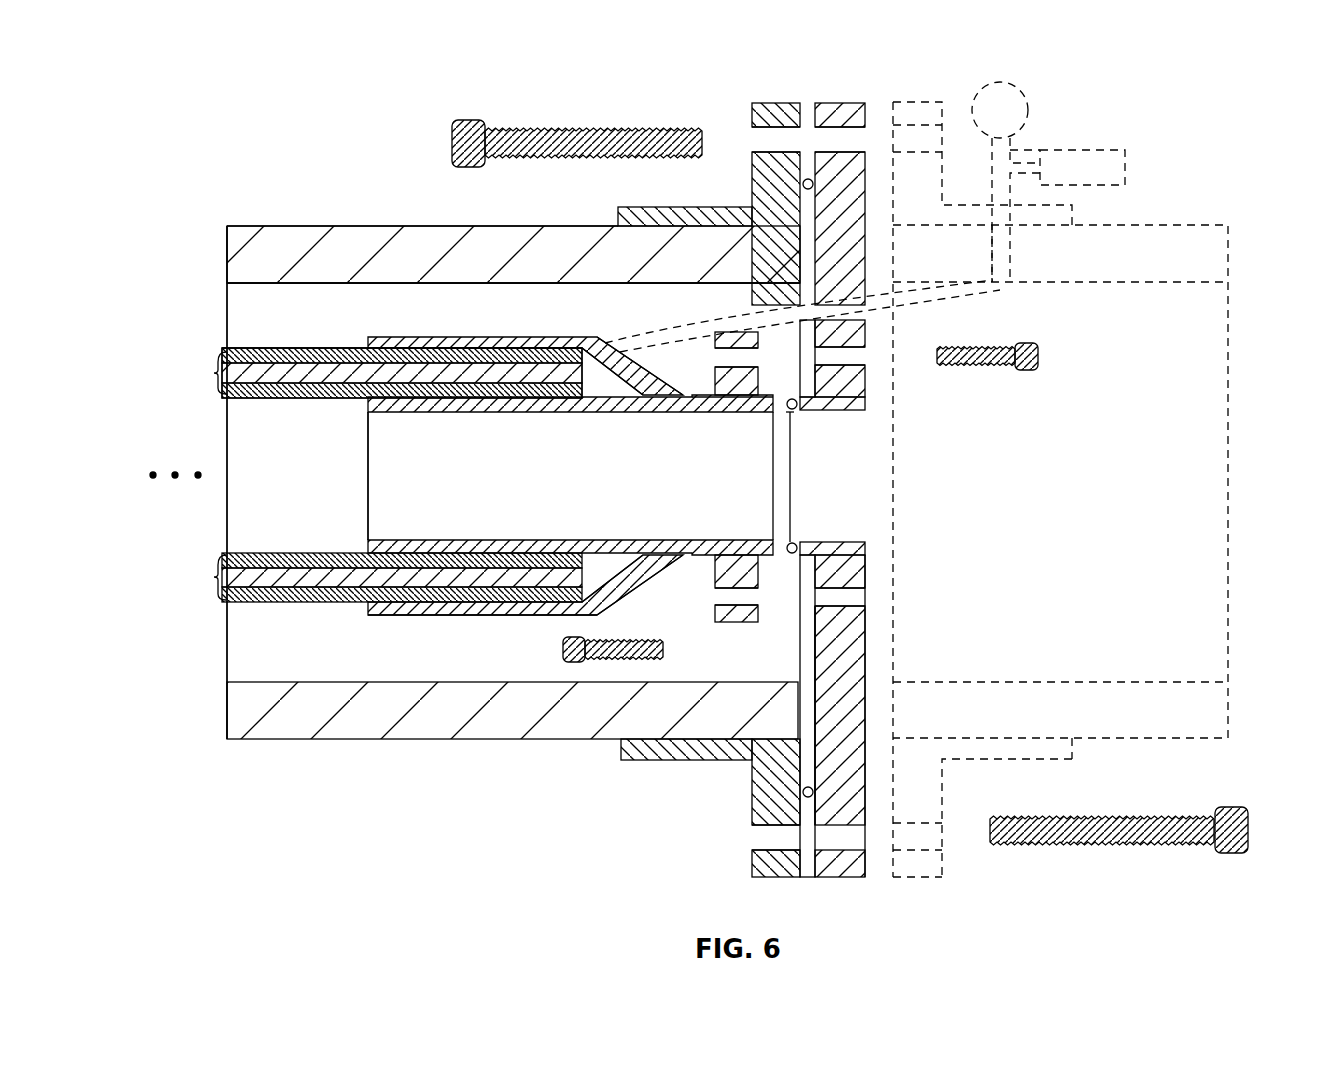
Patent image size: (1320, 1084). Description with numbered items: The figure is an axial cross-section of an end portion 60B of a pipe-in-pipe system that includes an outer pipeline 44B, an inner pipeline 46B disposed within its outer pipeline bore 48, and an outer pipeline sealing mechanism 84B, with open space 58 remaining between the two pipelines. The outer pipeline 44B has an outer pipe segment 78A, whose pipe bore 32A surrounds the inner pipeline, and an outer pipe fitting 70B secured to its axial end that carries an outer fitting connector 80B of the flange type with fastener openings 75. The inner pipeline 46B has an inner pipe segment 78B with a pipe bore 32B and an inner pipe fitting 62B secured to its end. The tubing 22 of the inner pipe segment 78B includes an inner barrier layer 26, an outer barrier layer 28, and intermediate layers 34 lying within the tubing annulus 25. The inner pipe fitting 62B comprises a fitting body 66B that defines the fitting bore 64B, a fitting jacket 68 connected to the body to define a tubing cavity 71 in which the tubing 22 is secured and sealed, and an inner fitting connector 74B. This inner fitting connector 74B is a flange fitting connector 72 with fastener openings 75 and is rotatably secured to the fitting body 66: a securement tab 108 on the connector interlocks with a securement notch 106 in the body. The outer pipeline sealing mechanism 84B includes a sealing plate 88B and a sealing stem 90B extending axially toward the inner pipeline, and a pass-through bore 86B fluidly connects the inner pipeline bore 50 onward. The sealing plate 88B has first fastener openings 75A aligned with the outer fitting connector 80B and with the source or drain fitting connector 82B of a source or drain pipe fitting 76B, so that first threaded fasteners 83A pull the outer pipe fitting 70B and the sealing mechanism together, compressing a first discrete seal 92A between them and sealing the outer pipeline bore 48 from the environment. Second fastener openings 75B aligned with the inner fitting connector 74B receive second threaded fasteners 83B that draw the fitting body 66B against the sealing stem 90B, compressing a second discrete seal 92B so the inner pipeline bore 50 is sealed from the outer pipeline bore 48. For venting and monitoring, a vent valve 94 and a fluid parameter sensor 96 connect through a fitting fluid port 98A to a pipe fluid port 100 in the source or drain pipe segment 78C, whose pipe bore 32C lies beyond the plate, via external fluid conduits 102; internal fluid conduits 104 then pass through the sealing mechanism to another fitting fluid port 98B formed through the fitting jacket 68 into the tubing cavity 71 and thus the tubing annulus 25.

The tubing 22 is at (377, 577).
The tubing annulus 25 is at (381, 373).
The inner barrier layer 26 is at (225, 394).
The outer barrier layer 28 is at (225, 350).
The pipe bore 32A is at (300, 482).
The pipe bore 32B is at (224, 479).
The pipe bore 32C is at (1060, 489).
The intermediate layers 34 is at (288, 375).
The outer pipeline 44B is at (455, 195).
The inner pipeline 46B is at (390, 320).
The outer pipeline bore 48 is at (512, 685).
The inner pipeline bore 50 is at (423, 476).
The open space 58 is at (240, 298).
The end portion 60B is at (215, 130).
The inner pipe fitting 62B is at (630, 600).
The fitting bore 64B is at (570, 476).
The fitting body 66 is at (675, 207).
The fitting body 66B is at (432, 414).
The fitting jacket 68 is at (425, 617).
The outer pipe fitting 70B is at (745, 770).
The tubing cavity 71 is at (604, 388).
The flange fitting connector 72 is at (735, 622).
The inner fitting connector 74B is at (751, 616).
The fastener openings 75 is at (760, 137).
The first fastener openings 75A is at (840, 138).
The second fastener openings 75B is at (855, 355).
The source or drain pipe fitting 76B is at (952, 770).
The outer pipe segment 78A is at (328, 226).
The inner pipe segment 78B is at (310, 348).
The source or drain pipe segment 78C is at (1195, 225).
The outer fitting connector 80B is at (758, 102).
The source or drain fitting connector 82B is at (918, 878).
The first threaded fasteners 83A is at (470, 120).
The second threaded fasteners 83B is at (1034, 364).
The outer pipeline sealing mechanism 84B is at (873, 628).
The pass-through bore 86B is at (822, 477).
The sealing plate 88B is at (858, 690).
The sealing stem 90B is at (792, 558).
The first discrete seal 92A is at (803, 184).
The second discrete seal 92B is at (780, 406).
The vent valve 94 is at (1095, 150).
The fluid parameter sensor 96 is at (1000, 82).
The fitting fluid port 98A is at (1005, 228).
The fitting fluid port 98B is at (608, 342).
The pipe fluid port 100 is at (1003, 272).
The external fluid conduits 102 is at (1022, 160).
The internal fluid conduits 104 is at (688, 335).
The securement notch 106 is at (732, 414).
The securement tab 108 is at (735, 596).